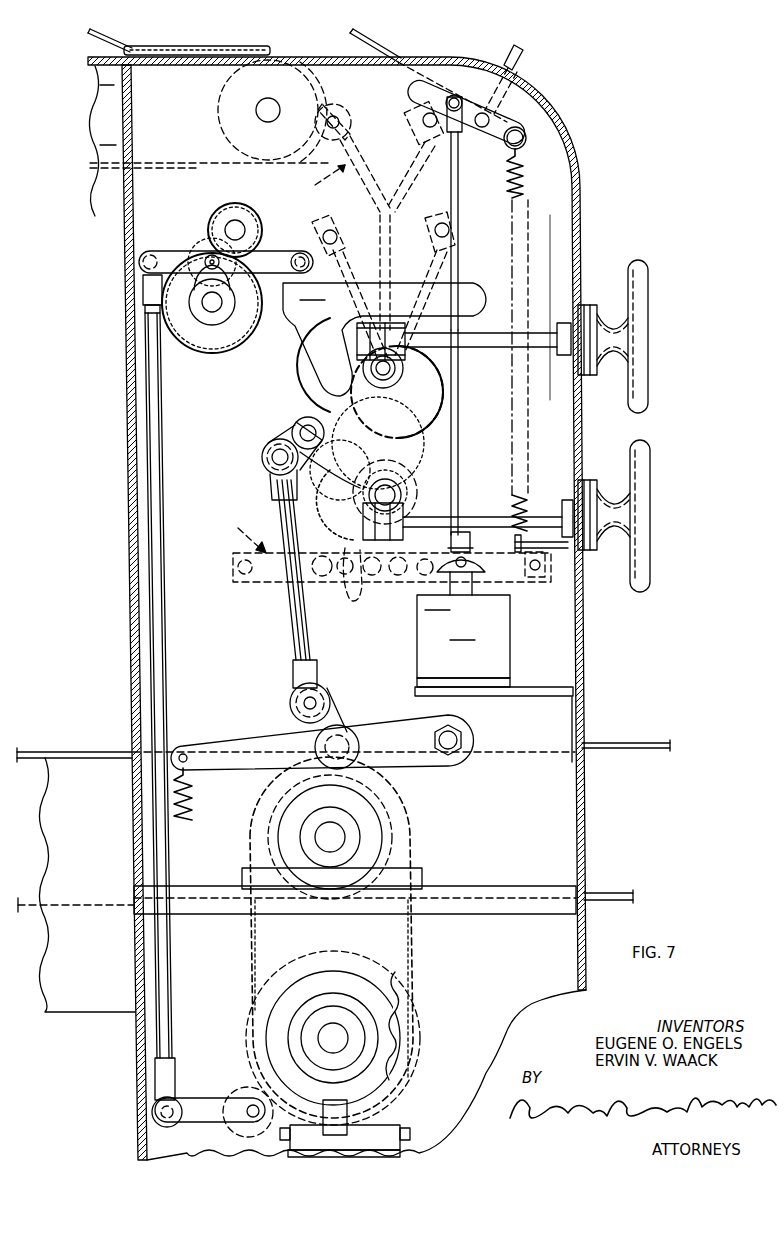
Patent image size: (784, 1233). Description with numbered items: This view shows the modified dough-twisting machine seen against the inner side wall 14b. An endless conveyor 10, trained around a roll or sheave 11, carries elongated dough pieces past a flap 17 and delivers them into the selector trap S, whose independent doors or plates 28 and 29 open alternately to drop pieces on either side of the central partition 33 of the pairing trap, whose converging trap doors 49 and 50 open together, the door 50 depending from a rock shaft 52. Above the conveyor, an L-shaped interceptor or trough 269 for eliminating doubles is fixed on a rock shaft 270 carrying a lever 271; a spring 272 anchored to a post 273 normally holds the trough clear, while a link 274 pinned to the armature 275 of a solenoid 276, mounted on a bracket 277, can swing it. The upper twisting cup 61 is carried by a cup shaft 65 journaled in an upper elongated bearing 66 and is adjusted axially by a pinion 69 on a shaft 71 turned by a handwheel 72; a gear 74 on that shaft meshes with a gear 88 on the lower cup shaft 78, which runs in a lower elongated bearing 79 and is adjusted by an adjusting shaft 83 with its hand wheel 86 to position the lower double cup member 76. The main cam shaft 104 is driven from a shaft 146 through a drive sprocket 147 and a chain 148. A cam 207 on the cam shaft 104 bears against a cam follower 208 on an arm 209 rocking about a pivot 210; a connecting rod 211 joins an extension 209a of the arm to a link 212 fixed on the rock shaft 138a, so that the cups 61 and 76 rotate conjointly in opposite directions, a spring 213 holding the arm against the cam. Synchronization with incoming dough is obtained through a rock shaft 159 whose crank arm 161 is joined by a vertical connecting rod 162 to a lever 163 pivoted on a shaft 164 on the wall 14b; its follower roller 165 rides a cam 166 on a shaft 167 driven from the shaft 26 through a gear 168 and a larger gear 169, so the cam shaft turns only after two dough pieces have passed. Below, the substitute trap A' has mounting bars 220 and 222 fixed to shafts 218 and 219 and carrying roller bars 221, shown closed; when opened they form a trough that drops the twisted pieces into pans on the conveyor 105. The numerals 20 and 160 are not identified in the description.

The endless conveyor 10 is at (270, 46).
The roll or sheave 11 is at (220, 102).
The inner side wall 14b is at (578, 196).
The flap 17 is at (114, 44).
The housing break 20 is at (98, 117).
The shaft 26 is at (236, 204).
The door or plate 28 is at (395, 198).
The door or plate 29 is at (370, 193).
The central partition 33 is at (382, 228).
The trap door 49 is at (422, 271).
The trap door 50 is at (347, 264).
The rock shaft 52 is at (336, 226).
The twisting cup 61 is at (444, 378).
The cup shaft 65 is at (358, 326).
The upper elongated bearing 66 is at (401, 355).
The pinion 69 is at (394, 325).
The shaft 71 is at (544, 334).
The handwheel 72 is at (637, 263).
The gear 74 is at (320, 354).
The double cup member 76 is at (459, 428).
The cup shaft 78 is at (378, 484).
The lower elongated bearing 79 is at (400, 482).
The adjusting shaft 83 is at (532, 526).
The hand wheel 86 is at (639, 436).
The gear 88 is at (418, 448).
The cam shaft 104 is at (338, 823).
The conveyor 105 is at (600, 745).
The rock shaft 138a is at (300, 422).
The shaft 146 is at (338, 1042).
The drive sprocket 147 is at (409, 1012).
The chain 148 is at (332, 500).
The rock shaft 159 is at (254, 1117).
The disc 160 is at (244, 1134).
The crank arm 161 is at (208, 1085).
The vertical connecting rod 162 is at (163, 1012).
The lever 163 is at (176, 250).
The shaft 164 is at (300, 252).
The follower roller 165 is at (196, 255).
The cam 166 is at (212, 312).
The shaft 167 is at (212, 313).
The gear 168 is at (246, 210).
The gear 169 is at (224, 310).
The cam 207 is at (258, 832).
The cam follower 208 is at (343, 728).
The arm 209 is at (379, 728).
The extension 209a is at (324, 698).
The pivot 210 is at (459, 738).
The connecting rod 211 is at (311, 640).
The link 212 is at (279, 434).
The spring 213 is at (197, 814).
The shaft 218 is at (340, 557).
The shaft 219 is at (468, 547).
The mounting bars 220 is at (256, 580).
The roller bars 221 is at (330, 584).
The mounting bars 222 is at (430, 585).
The interceptor or trough 269 is at (378, 47).
The rock shaft 270 is at (490, 118).
The lever 271 is at (519, 137).
The spring 272 is at (518, 190).
The post 273 is at (562, 548).
The link 274 is at (457, 258).
The armature 275 is at (477, 580).
The solenoid 276 is at (507, 647).
The bracket 277 is at (524, 688).
The trap A' is at (243, 531).
The trap S is at (320, 179).